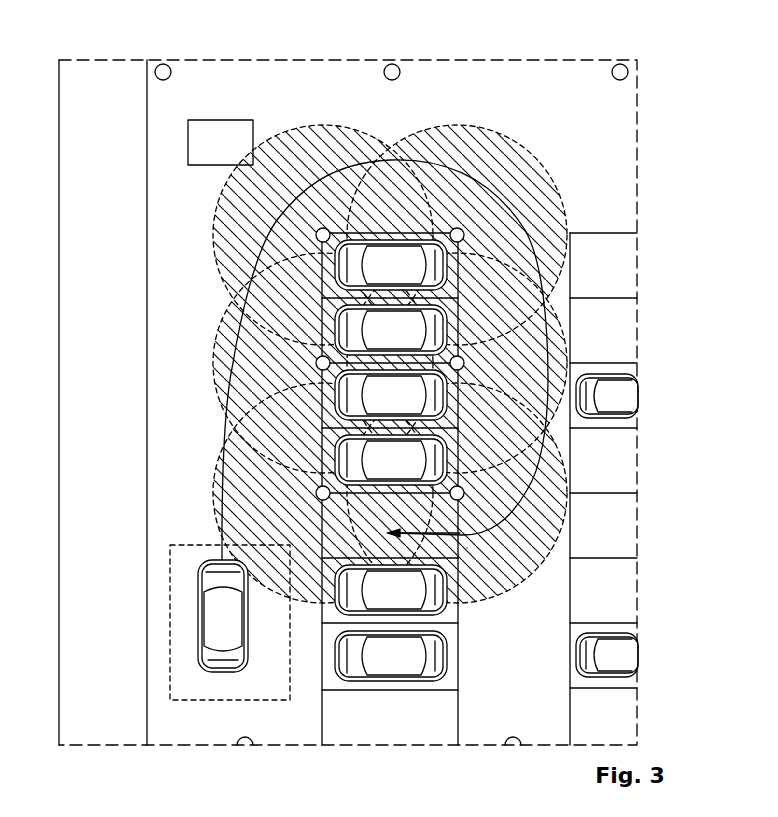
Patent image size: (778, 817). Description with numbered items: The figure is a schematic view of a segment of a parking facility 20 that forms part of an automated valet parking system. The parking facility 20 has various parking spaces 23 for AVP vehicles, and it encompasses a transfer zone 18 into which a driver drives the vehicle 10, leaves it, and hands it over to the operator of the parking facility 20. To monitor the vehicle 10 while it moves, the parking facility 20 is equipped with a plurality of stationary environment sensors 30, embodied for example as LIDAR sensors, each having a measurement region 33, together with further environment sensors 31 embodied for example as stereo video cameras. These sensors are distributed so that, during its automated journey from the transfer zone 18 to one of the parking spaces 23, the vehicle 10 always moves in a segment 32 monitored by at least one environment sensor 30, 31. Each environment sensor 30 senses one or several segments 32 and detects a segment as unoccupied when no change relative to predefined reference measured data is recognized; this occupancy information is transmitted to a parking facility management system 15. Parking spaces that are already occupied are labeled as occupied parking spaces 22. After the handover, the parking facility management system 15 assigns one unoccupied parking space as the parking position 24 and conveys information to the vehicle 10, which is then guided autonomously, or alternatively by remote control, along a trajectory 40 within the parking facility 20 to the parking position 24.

The vehicle 10 is at (245, 625).
The parking facility management system 15 is at (220, 120).
The transfer zone 18 is at (190, 702).
The parking facility 20 is at (590, 77).
The occupied parking space 22 is at (400, 250).
The parking space 23 is at (610, 268).
The parking position 24 is at (467, 548).
The environment sensor 30 is at (320, 243).
The further environment sensor 31 is at (163, 64).
The monitored segment 32 is at (317, 137).
The measurement region 33 is at (277, 133).
The trajectory 40 is at (528, 570).